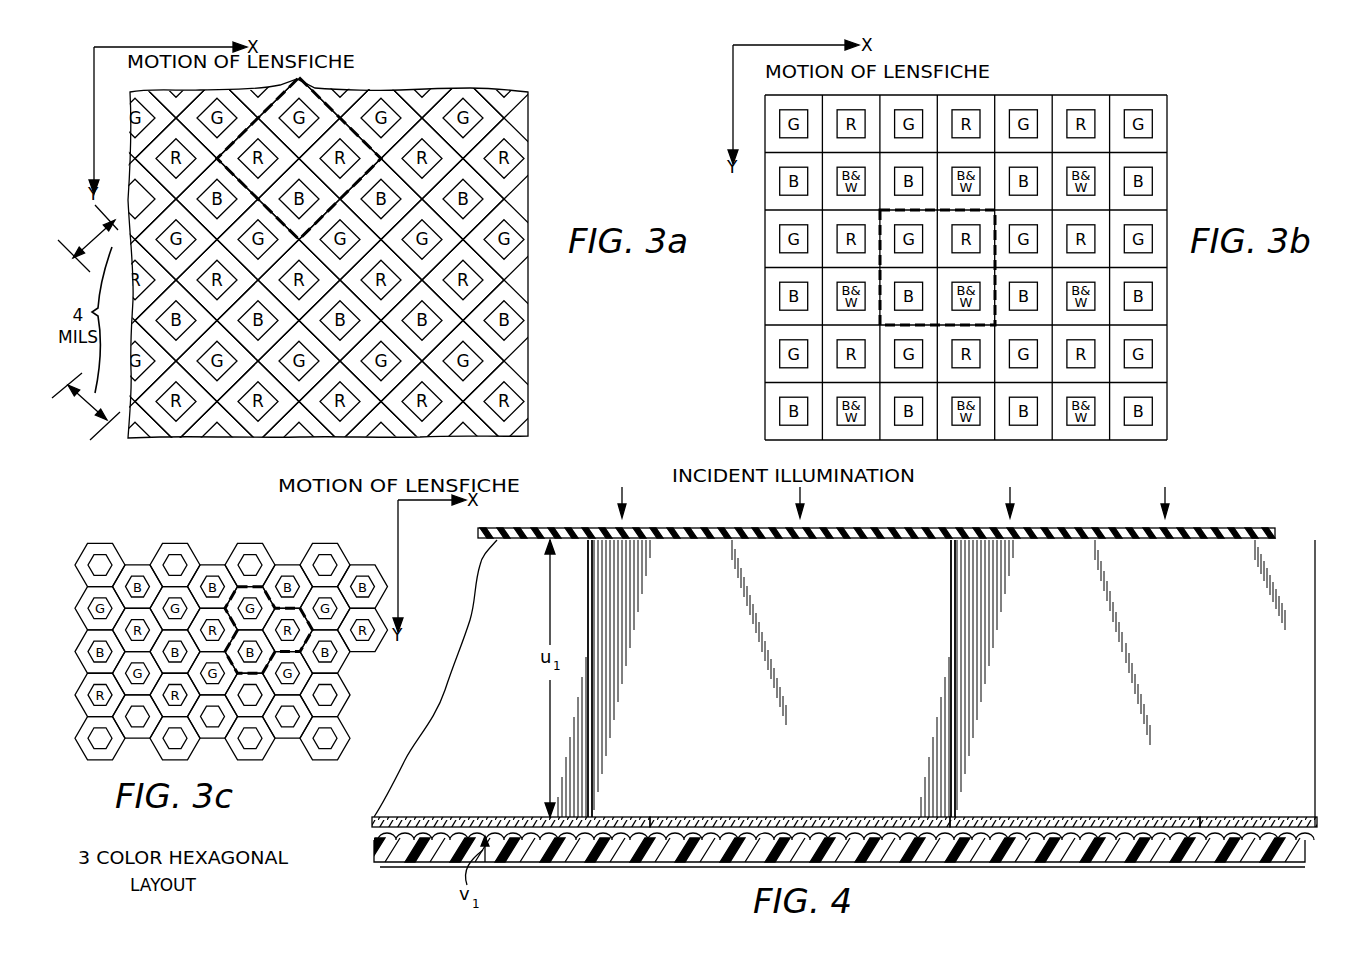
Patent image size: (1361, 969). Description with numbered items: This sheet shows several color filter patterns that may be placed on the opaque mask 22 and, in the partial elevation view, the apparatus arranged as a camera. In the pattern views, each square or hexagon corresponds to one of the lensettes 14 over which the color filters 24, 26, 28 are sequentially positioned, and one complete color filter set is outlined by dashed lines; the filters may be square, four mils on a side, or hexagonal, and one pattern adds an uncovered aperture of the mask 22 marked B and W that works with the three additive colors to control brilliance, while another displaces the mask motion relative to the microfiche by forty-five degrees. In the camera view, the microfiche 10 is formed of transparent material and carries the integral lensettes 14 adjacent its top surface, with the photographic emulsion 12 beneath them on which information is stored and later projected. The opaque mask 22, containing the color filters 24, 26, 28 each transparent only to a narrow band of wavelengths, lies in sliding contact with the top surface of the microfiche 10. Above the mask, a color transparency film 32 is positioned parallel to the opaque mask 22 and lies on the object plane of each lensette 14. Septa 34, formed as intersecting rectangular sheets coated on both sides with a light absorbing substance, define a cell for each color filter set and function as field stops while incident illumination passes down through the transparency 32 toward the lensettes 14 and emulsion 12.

The microfiche 10 is at (1285, 850).
The photographic emulsion 12 is at (1228, 866).
The lensette 14 is at (393, 832).
The opaque mask 22 is at (1245, 817).
The color filter 24 is at (422, 817).
The color filter 26 is at (777, 817).
The color filter 28 is at (1120, 817).
The color transparency film 32 is at (1228, 528).
The septa 34 is at (592, 665).